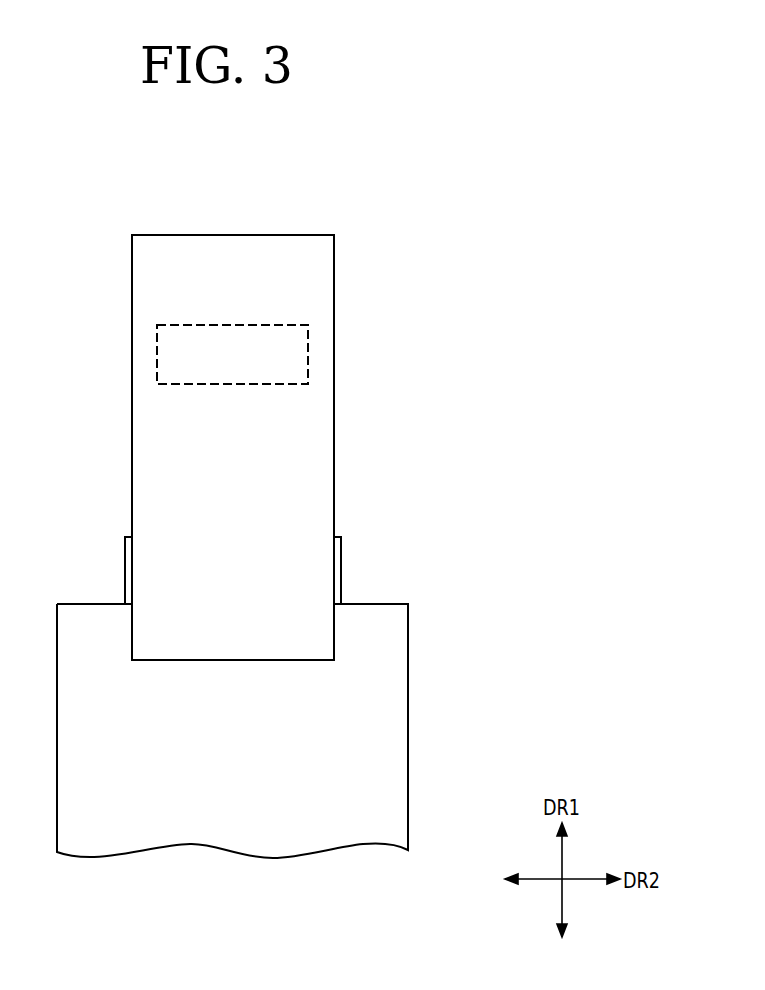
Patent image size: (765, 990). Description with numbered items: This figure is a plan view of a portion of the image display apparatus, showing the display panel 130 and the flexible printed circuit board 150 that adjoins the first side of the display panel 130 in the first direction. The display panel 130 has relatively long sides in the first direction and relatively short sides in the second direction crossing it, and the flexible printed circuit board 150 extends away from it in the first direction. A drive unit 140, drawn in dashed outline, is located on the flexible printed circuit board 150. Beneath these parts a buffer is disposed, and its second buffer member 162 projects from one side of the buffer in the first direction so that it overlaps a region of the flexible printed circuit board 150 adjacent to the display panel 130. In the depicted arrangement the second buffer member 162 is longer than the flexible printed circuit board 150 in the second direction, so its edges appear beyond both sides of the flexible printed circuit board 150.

The display panel 130 is at (393, 729).
The drive unit 140 is at (308, 350).
The flexible printed circuit board 150 is at (322, 479).
The second buffer member 162 is at (341, 570).